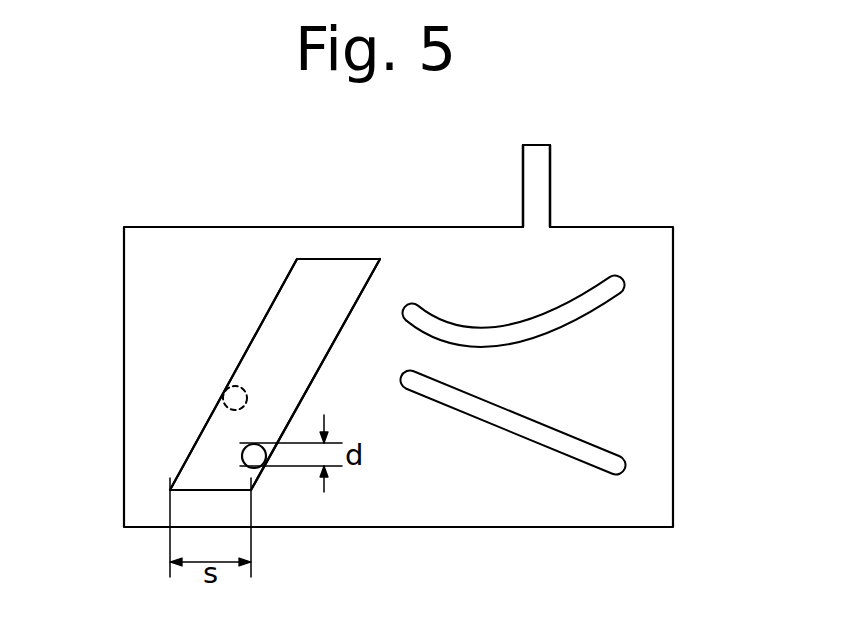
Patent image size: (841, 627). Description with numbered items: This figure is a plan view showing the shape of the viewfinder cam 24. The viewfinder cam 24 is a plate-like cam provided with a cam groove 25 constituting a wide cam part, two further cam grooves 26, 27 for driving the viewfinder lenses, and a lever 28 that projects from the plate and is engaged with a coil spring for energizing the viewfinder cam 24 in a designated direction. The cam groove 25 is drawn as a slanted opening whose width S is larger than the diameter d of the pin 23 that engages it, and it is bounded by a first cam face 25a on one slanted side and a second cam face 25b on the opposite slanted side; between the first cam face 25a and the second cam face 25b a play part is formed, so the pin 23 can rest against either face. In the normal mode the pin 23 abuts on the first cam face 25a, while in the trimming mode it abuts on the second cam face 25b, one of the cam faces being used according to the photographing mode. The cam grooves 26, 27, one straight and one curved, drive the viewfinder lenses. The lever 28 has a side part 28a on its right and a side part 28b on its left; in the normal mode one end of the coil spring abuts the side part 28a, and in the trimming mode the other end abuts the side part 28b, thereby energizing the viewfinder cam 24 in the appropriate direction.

The pin 23 is at (259, 466).
The viewfinder cam 24 is at (146, 399).
The cam groove 25 is at (317, 270).
The first cam face 25a is at (358, 294).
The second cam face 25b is at (275, 309).
The cam groove 26 is at (612, 465).
The cam groove 27 is at (612, 292).
The lever 28 is at (538, 175).
The side part 28a is at (551, 210).
The side part 28b is at (523, 204).